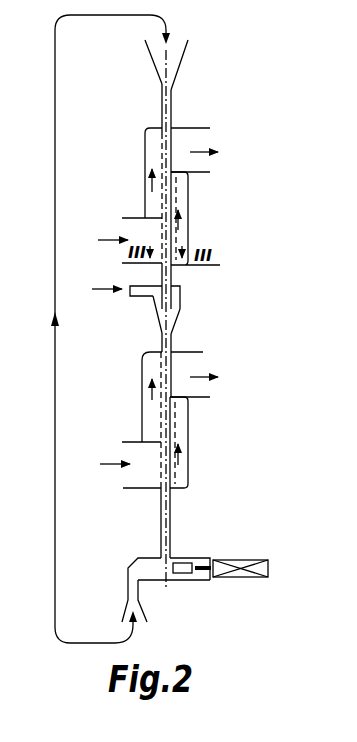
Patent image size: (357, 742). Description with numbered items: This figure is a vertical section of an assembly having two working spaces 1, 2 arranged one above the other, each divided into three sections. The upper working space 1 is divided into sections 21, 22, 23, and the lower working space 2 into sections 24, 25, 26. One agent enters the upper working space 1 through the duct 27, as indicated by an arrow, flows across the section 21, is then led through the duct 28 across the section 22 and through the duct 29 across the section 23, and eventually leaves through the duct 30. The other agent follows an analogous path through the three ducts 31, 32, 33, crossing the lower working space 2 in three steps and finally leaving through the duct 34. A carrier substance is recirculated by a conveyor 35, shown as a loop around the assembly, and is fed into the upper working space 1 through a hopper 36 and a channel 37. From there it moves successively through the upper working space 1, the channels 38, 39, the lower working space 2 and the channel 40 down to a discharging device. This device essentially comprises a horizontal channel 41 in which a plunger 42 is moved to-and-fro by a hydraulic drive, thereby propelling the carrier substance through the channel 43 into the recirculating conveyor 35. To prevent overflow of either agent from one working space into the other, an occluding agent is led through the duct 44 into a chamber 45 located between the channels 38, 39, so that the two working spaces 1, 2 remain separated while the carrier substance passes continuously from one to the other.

The upper working space 1 is at (168, 193).
The lower working space 2 is at (170, 418).
The first section of working space 1 21 is at (184, 241).
The second section of working space 1 22 is at (168, 202).
The third section of working space 1 23 is at (171, 143).
The first section of working space 2 24 is at (188, 475).
The second section of working space 2 25 is at (165, 427).
The third section of working space 2 26 is at (226, 375).
The inlet duct 27 is at (140, 228).
The duct 28 is at (180, 188).
The duct 29 is at (153, 152).
The outlet duct 30 is at (212, 130).
The first duct of lower working space 31 is at (142, 467).
The second duct of lower working space 32 is at (180, 413).
The third duct of lower working space 33 is at (150, 411).
The outlet duct 34 is at (205, 351).
The recirculating conveyor 35 is at (55, 343).
The hopper 36 is at (185, 53).
The channel 37 is at (167, 107).
The channel 38 is at (180, 275).
The channel 39 is at (170, 337).
The channel 40 is at (167, 512).
The horizontal channel 41 is at (150, 568).
The plunger 42 is at (188, 570).
The channel 43 is at (130, 590).
The duct 44 is at (155, 283).
The chamber 45 is at (153, 298).